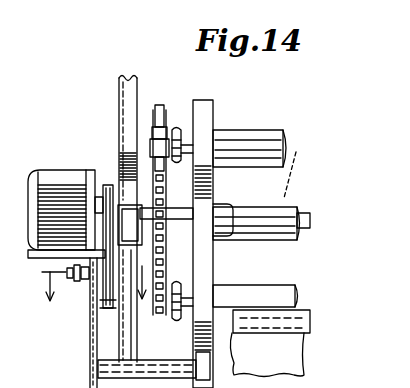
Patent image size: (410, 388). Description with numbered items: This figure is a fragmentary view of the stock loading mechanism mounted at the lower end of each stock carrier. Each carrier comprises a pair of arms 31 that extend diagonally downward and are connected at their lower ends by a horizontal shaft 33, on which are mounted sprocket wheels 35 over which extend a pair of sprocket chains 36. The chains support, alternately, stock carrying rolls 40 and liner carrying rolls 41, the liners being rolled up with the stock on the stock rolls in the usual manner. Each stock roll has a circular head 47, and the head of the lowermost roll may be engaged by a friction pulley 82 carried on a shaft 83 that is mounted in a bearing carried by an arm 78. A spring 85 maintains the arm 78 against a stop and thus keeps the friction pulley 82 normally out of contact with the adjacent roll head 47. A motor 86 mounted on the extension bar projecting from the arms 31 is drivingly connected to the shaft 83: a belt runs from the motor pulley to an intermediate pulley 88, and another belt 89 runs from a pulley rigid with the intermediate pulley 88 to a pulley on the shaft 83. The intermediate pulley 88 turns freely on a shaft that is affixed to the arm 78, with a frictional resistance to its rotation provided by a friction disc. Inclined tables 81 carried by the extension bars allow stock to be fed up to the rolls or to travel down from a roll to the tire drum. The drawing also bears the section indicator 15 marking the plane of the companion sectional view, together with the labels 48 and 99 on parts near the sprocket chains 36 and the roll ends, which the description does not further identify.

The arms 31 is at (118, 96).
The belt 89 is at (90, 325).
The intermediate pulley 88 is at (108, 310).
The motor 86 is at (46, 172).
The direction arrow 15 is at (57, 284).
The sprocket chains 36 is at (164, 97).
The sprocket 48 is at (176, 126).
The sprocket wheels 35 is at (170, 207).
The horizontal shaft 33 is at (134, 252).
The circular head 47 is at (206, 113).
The stock carrying rolls 40 is at (262, 130).
The liner carrying rolls 41 is at (252, 207).
The roller end 99 is at (298, 175).
The friction pulley 82 is at (225, 357).
The inclined tables 81 is at (250, 372).
The shaft 83 is at (90, 366).
The arm 78 is at (130, 331).
The spring 85 is at (150, 380).